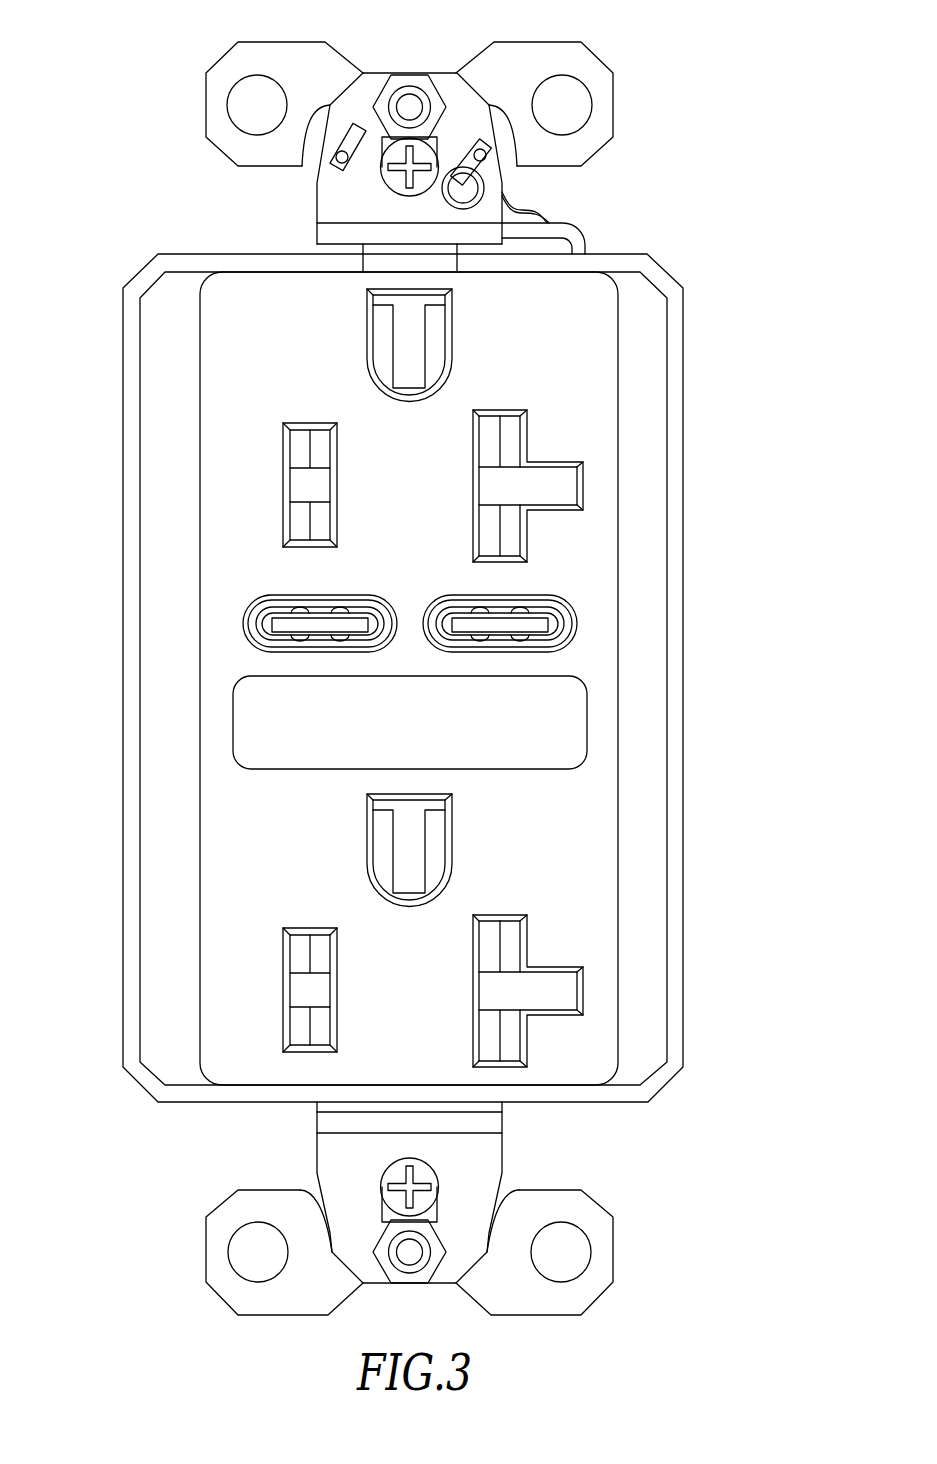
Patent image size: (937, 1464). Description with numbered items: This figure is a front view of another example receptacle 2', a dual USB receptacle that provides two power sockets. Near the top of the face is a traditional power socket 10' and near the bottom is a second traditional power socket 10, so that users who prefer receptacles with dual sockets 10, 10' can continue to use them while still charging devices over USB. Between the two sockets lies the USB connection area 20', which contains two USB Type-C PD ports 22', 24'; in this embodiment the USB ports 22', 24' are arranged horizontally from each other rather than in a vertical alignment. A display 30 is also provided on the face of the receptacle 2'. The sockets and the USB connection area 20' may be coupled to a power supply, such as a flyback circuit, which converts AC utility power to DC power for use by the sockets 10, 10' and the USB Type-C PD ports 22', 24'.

The receptacle 2' is at (353, 667).
The second power socket 10' is at (418, 425).
The socket 10 is at (417, 930).
The USB connection area 20' is at (415, 556).
The USB port 22' is at (320, 604).
The USB port 24' is at (505, 602).
The display 30 is at (515, 769).